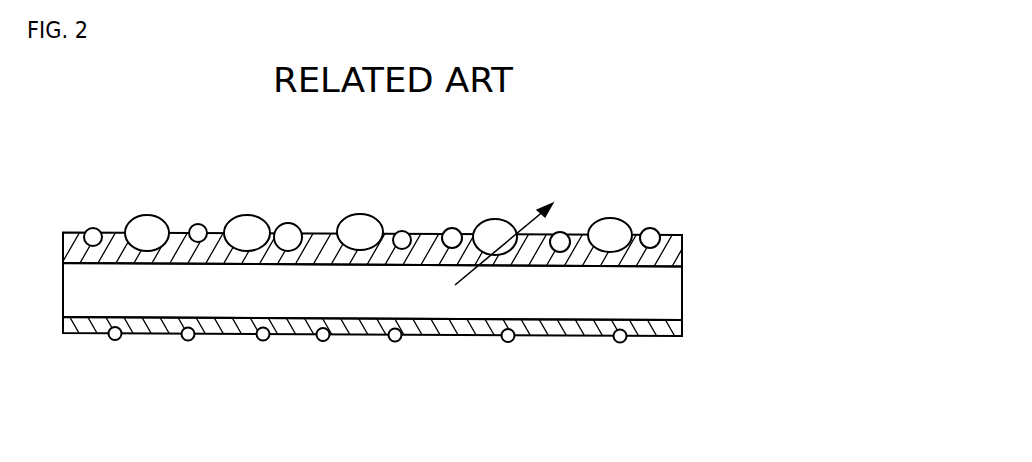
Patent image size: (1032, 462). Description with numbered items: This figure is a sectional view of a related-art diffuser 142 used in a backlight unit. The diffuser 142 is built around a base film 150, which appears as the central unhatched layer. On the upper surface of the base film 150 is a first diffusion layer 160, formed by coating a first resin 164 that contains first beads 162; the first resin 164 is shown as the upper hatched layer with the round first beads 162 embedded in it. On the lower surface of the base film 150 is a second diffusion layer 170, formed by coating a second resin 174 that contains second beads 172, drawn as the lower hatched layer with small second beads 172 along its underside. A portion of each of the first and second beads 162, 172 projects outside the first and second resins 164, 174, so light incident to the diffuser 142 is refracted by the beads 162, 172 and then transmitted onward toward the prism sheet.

The diffuser 142 is at (442, 261).
The base film 150 is at (675, 293).
The first diffusion layer 160 is at (438, 197).
The first beads 162 is at (608, 225).
The first resin 164 is at (668, 235).
The second diffusion layer 170 is at (447, 376).
The second beads 172 is at (620, 342).
The second resin 174 is at (663, 338).